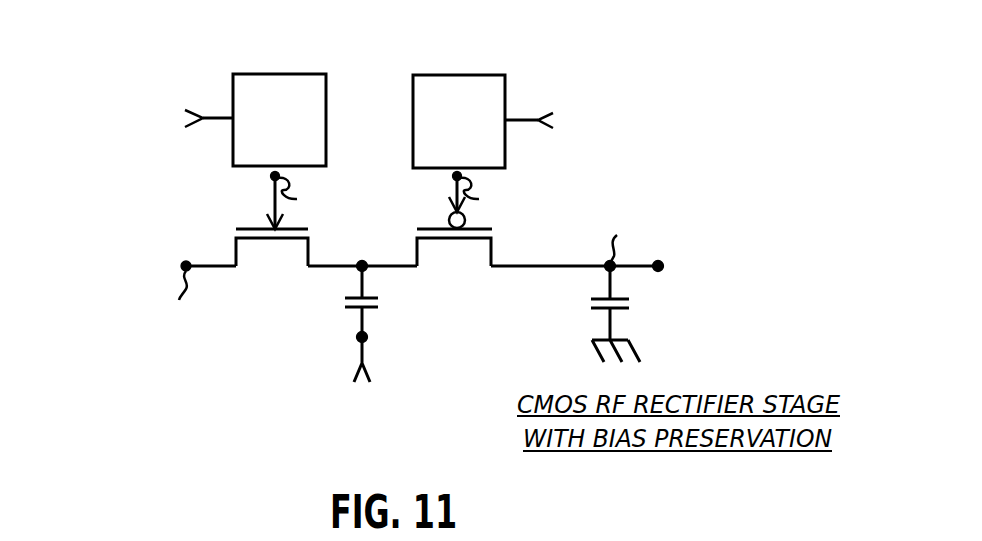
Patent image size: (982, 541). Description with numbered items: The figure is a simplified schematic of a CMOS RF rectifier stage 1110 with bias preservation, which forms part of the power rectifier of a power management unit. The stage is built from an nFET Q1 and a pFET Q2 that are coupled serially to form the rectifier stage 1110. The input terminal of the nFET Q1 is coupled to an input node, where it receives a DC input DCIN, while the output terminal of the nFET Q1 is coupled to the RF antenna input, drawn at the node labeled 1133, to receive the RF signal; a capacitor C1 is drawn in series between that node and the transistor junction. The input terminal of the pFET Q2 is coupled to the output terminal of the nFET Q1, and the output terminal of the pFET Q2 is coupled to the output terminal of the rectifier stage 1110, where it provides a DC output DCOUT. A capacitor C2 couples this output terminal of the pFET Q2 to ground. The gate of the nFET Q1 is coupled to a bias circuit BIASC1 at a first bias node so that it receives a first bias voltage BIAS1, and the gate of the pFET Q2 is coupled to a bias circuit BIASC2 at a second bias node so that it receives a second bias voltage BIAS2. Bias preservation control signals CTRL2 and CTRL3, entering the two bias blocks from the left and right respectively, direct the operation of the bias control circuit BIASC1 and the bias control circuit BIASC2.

The CMOS RF rectifier stage 1110 is at (141, 46).
The RF A input node 1133 is at (360, 338).
The nFET Q1 is at (272, 250).
The pFET Q2 is at (454, 249).
The first capacitor C1 is at (379, 301).
The capacitor C2 is at (626, 314).
The bias circuit BIASC1 is at (279, 120).
The bias circuit BIASC2 is at (459, 121).
The bias preservation control signal CTRL2 is at (173, 117).
The bias preservation control signal CTRL3 is at (562, 120).
The first bias voltage BIAS1 is at (294, 201).
The second bias voltage BIAS2 is at (472, 200).
The DC input DCIN is at (162, 300).
The DC output DCOUT is at (677, 246).